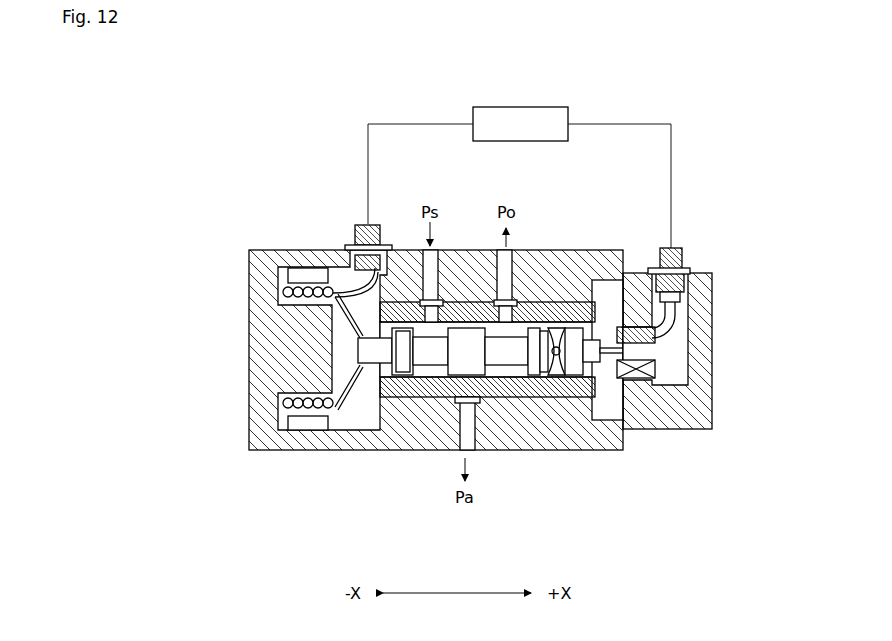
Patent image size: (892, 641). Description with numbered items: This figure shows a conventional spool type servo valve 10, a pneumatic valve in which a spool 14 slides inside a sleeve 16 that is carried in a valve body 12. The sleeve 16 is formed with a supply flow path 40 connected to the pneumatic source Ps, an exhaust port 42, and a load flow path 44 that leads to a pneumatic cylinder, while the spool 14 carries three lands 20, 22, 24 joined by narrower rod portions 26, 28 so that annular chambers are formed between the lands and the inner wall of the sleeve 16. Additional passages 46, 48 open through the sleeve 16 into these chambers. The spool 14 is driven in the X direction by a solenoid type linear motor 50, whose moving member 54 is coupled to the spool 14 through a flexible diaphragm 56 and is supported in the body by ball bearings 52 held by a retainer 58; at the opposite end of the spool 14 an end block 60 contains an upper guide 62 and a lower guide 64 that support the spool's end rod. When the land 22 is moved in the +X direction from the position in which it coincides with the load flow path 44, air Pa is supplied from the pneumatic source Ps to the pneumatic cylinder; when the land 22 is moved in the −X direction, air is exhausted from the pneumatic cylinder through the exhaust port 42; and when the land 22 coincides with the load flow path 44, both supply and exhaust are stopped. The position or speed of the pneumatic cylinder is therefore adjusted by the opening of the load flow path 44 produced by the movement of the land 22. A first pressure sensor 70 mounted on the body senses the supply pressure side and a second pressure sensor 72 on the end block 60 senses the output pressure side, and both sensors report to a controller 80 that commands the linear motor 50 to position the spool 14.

The flow control valve 10 is at (240, 360).
The valve body 12 is at (652, 462).
The spool 14 is at (515, 452).
The sleeve 16 is at (603, 300).
The land 20 is at (400, 397).
The land 22 is at (440, 372).
The land 24 is at (589, 435).
The second land 26 is at (497, 360).
The second rod portion 28 is at (520, 355).
The supply flow path 40 is at (399, 302).
The exhaust port 42 is at (530, 302).
The load flow path 44 is at (487, 452).
The supply port 46 is at (441, 300).
The outlet port 48 is at (493, 300).
The solenoid type linear motor 50 is at (317, 366).
The ball bearing 52 is at (300, 425).
The hub 54 is at (368, 400).
The diaphragm 56 is at (345, 405).
The retainer 58 is at (338, 292).
The end block 60 is at (711, 351).
The upper guide 62 is at (655, 333).
The lower guide 64 is at (655, 363).
The first pressure sensor 70 is at (357, 232).
The second pressure sensor 72 is at (686, 254).
The controller 80 is at (575, 107).